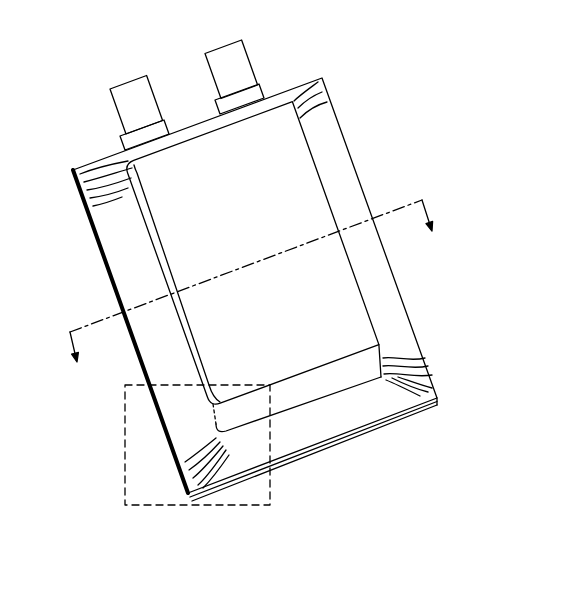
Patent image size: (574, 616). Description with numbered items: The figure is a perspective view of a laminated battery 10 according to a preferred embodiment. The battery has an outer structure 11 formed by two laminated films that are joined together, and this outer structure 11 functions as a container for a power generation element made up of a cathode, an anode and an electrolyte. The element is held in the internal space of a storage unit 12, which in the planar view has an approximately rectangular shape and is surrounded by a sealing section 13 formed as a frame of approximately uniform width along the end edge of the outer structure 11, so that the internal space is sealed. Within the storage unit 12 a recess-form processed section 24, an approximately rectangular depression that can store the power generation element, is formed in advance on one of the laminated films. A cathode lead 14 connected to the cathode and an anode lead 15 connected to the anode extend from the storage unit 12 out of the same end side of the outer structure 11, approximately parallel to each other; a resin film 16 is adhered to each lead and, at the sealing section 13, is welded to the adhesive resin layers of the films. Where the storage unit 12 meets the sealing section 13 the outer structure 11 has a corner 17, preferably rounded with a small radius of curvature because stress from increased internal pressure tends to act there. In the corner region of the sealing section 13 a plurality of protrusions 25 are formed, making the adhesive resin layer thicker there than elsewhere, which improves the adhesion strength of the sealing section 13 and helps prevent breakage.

The laminated battery 10 is at (466, 32).
The outer structure 11 is at (335, 82).
The storage unit 12 is at (163, 222).
The sealing section 13 is at (130, 283).
The cathode lead 14 is at (128, 105).
The anode lead 15 is at (233, 62).
The resin film 16 is at (130, 137).
The corner 17 is at (387, 383).
The recess-form processed section 24 is at (302, 188).
The protrusions 25 is at (428, 374).